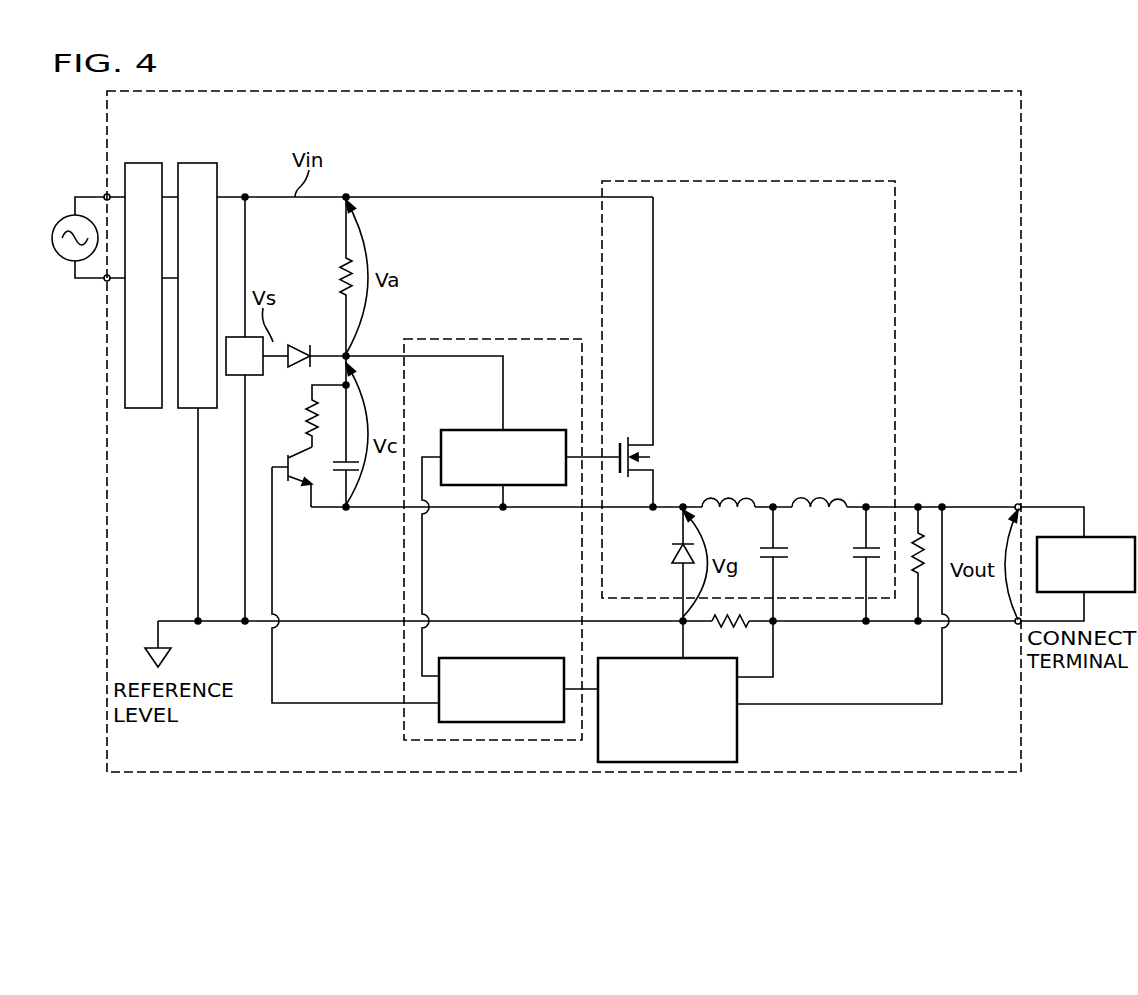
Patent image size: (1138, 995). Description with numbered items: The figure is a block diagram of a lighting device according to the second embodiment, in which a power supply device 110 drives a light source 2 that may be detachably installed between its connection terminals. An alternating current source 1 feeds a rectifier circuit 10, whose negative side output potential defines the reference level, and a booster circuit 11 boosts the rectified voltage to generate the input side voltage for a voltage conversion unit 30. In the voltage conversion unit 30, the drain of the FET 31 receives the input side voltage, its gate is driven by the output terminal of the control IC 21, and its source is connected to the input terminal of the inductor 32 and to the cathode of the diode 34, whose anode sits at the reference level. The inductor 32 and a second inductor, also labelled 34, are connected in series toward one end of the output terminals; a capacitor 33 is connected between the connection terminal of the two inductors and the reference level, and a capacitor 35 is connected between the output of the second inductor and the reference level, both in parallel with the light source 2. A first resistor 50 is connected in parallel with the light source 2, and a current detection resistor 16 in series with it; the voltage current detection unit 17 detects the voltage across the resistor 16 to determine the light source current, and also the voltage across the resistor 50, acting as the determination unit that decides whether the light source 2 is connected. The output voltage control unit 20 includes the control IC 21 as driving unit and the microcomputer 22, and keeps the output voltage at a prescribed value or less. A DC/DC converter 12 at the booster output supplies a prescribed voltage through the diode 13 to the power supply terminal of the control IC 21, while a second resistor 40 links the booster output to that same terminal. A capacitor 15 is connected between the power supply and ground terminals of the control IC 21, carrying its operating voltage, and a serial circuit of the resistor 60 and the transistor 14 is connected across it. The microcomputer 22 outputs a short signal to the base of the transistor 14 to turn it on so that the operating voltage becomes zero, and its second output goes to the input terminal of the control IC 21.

The alternating current source 1 is at (62, 210).
The light source 2 is at (1112, 537).
The rectifier circuit 10 is at (141, 162).
The booster circuit 11 is at (192, 162).
The DC/DC converter 12 is at (235, 376).
The diode 13 is at (296, 341).
The transistor 14 is at (300, 447).
The capacitor 15 is at (336, 478).
The current detection resistor 16 is at (727, 632).
The voltage current detection unit 17 is at (625, 659).
The output voltage control unit 20 is at (533, 339).
The control IC 21 is at (530, 430).
The microcomputer 22 is at (500, 658).
The voltage conversion unit 30 is at (803, 181).
The FET 31 is at (655, 445).
The inductor 32 is at (733, 497).
The capacitor 33 is at (760, 555).
The diode 34 is at (672, 552).
The capacitor 35 is at (853, 555).
The second resistor 40 is at (336, 274).
The first resistor 50 is at (922, 542).
The resistor 60 is at (303, 413).
The power supply device 110 is at (1021, 118).